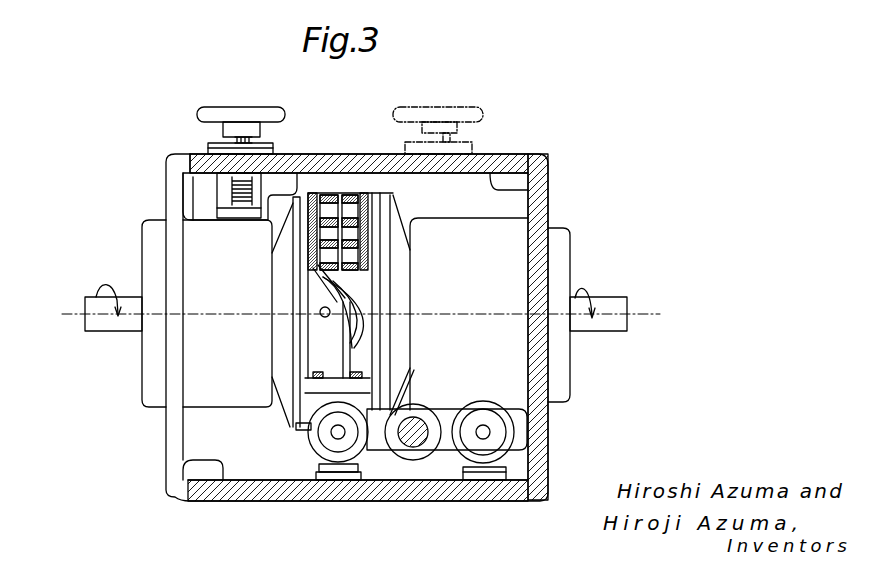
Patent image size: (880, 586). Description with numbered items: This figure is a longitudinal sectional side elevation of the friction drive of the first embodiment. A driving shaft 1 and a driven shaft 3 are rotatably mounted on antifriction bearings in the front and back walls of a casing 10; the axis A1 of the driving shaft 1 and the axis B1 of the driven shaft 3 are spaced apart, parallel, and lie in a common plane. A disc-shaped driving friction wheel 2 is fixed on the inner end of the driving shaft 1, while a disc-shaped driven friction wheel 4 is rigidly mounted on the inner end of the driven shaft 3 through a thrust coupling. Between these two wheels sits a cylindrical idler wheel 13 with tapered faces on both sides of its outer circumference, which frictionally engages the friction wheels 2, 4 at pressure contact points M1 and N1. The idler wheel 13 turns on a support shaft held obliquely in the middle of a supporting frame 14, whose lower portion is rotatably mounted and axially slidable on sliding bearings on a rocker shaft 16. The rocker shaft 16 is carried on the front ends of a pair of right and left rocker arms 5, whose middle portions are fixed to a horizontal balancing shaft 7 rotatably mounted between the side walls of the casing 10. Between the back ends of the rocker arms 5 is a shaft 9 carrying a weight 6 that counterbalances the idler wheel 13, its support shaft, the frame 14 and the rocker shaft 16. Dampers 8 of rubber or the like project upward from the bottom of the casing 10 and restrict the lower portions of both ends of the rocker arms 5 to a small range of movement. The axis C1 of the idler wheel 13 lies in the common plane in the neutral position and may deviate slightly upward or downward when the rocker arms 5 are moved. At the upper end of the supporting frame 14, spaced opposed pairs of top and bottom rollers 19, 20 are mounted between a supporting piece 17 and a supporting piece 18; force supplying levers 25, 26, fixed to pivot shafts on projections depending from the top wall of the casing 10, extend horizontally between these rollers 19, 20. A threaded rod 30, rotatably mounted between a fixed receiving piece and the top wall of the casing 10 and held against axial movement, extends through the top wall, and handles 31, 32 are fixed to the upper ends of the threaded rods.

The driving shaft 1 is at (127, 331).
The driving friction wheel 2 is at (300, 427).
The driven shaft 3 is at (600, 320).
The driven friction wheel 4 is at (400, 324).
The rocker arms 5 is at (376, 448).
The weight 6 is at (524, 443).
The horizontal balancing shaft 7 is at (413, 433).
The dampers 8 is at (331, 473).
The shaft 9 is at (483, 433).
The casing 10 is at (505, 155).
The cylindrical idler wheel 13 is at (398, 342).
The supporting frame 14 is at (347, 313).
The rocker shaft 16 is at (336, 434).
The supporting piece 17 is at (372, 195).
The supporting piece 18 is at (314, 193).
The top rollers 19 is at (410, 262).
The bottom rollers 20 is at (328, 195).
The force supplying lever 25 is at (369, 224).
The force supplying lever 26 is at (310, 213).
The threaded rod 30 is at (242, 207).
The handle 31 is at (480, 112).
The handle 32 is at (250, 108).
The axis of the driving shaft A1 is at (93, 318).
The axis of the driven shaft B1 is at (637, 314).
The axis of the idler wheel C1 is at (318, 320).
The pressure contact point M1 is at (318, 312).
The pressure contact point N1 is at (372, 310).